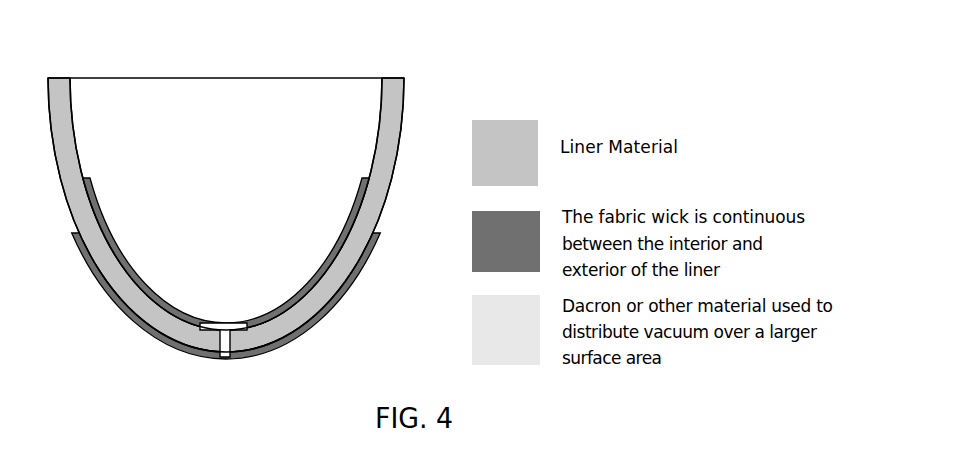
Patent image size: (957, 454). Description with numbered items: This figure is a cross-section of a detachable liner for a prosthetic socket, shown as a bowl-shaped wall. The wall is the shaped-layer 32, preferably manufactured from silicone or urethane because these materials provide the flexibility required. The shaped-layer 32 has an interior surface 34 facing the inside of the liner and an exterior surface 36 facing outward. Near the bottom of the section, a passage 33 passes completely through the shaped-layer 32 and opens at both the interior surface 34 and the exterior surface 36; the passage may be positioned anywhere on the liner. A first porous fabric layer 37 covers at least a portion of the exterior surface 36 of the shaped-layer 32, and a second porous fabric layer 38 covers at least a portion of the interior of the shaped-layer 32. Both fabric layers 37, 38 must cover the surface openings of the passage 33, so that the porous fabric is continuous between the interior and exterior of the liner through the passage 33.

The shaped-layer 32 is at (401, 93).
The passage 33 is at (228, 343).
The interior surface 34 is at (370, 134).
The exterior surface 36 is at (397, 168).
The first porous fabric layer 37 is at (342, 302).
The second porous fabric layer 38 is at (332, 246).